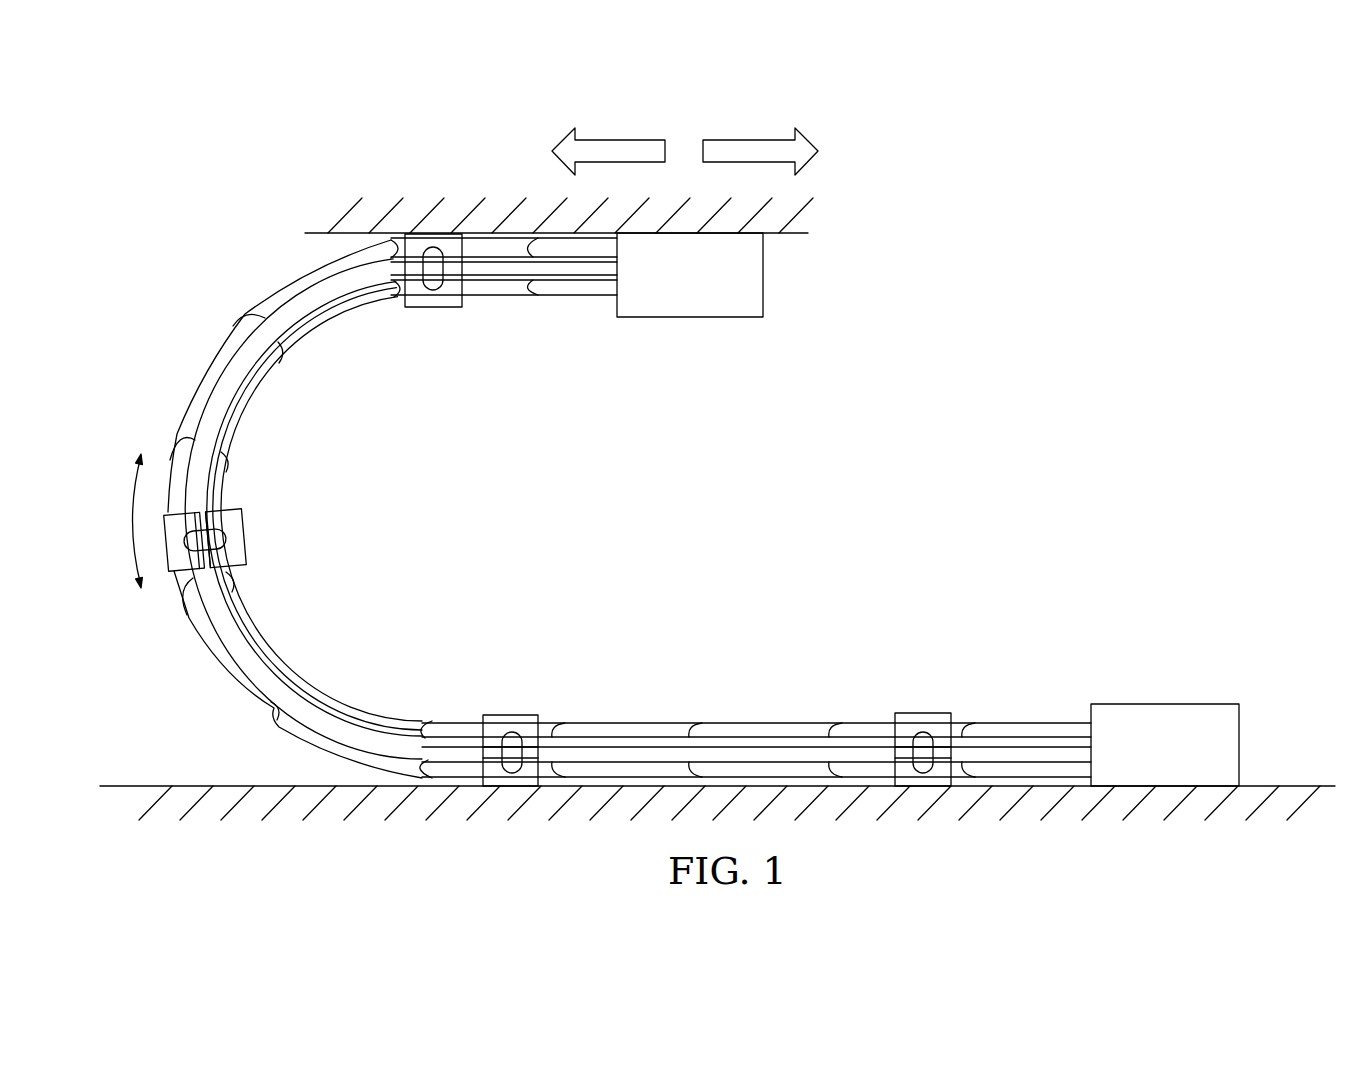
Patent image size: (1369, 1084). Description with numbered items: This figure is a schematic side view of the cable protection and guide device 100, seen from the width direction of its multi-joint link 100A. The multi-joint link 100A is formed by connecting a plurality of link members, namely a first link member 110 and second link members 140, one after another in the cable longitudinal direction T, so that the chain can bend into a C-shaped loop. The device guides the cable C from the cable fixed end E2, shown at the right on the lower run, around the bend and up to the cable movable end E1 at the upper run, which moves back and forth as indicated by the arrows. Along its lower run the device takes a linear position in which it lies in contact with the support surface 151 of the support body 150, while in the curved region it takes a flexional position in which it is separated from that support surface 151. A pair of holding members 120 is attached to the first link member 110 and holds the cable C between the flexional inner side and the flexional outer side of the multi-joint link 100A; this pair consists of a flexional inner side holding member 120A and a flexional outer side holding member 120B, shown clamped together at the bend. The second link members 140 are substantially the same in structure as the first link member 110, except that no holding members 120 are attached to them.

The cable protection and guide device 100 is at (152, 172).
The multi-joint link 100A is at (127, 407).
The first link member 110 is at (489, 300).
The pair of holding members 120 is at (276, 539).
The flexional inner side holding member 120A is at (233, 522).
The flexional outer side holding member 120B is at (238, 557).
The second link member 140 is at (262, 418).
The support body 150 is at (712, 736).
The support surface 151 is at (232, 785).
The cable C is at (203, 392).
The cable longitudinal direction T is at (124, 521).
The cable movable end E1 is at (703, 296).
The cable fixed end E2 is at (1161, 715).